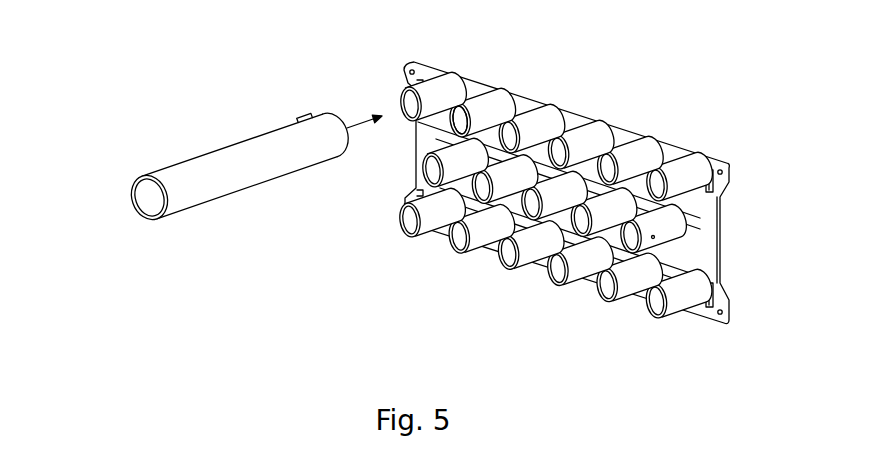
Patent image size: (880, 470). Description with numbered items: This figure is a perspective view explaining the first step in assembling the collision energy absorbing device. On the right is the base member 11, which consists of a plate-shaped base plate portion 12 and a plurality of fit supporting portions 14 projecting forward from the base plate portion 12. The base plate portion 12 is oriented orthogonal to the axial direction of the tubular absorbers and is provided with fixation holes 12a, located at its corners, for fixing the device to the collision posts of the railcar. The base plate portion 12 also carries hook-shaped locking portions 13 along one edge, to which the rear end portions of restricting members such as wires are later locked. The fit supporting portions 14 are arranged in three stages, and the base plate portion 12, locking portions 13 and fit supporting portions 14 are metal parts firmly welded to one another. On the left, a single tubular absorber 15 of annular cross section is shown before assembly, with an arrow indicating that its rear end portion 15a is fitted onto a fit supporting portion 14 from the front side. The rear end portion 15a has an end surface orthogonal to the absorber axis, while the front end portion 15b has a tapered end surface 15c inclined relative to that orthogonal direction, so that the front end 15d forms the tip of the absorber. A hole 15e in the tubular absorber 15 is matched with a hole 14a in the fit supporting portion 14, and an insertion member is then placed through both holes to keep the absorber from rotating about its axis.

The base member 11 is at (519, 91).
The base plate portion 12 is at (605, 124).
The fixation holes 12a is at (407, 70).
The locking portions 13 is at (713, 168).
The fit supporting portions 14 is at (478, 105).
The hole of the fit supporting portion 14a is at (458, 102).
The tubular absorber 15 is at (230, 155).
The rear end portion 15a is at (317, 163).
The front end portion 15b is at (168, 213).
The end surface 15c is at (133, 192).
The front end 15d is at (137, 222).
The hole of the tubular absorber 15e is at (300, 122).